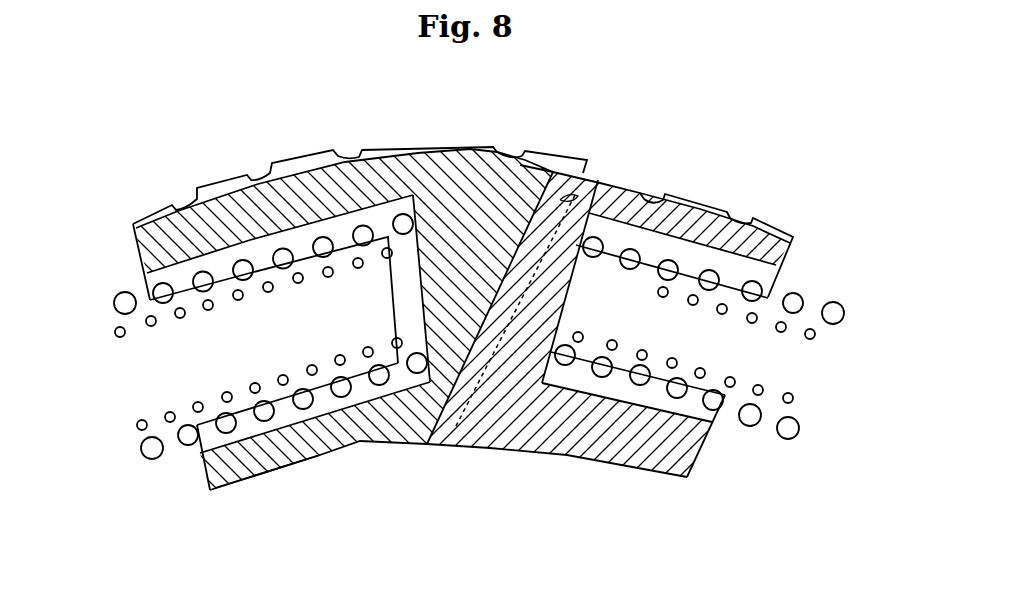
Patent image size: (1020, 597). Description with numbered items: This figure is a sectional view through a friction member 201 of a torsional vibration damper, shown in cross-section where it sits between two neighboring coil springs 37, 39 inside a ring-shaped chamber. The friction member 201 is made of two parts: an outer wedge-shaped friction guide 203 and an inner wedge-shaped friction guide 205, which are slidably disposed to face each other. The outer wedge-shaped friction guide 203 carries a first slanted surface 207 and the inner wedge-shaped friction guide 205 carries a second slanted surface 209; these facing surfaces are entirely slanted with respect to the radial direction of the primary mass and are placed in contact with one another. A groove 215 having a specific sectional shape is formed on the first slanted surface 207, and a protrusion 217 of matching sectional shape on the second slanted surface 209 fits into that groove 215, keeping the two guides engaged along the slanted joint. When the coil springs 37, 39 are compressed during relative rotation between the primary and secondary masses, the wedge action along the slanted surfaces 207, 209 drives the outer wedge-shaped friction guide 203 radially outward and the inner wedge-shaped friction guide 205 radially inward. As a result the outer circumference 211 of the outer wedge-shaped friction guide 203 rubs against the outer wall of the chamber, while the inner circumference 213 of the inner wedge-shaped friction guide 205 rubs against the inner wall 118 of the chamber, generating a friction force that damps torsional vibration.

The coil spring 37 is at (836, 302).
The coil spring 39 is at (121, 293).
The inner wall 118 is at (265, 487).
The friction member 201 is at (507, 505).
The outer wedge-shaped friction guide 203 is at (410, 433).
The inner wedge-shaped friction guide 205 is at (472, 440).
The first slanted surface 207 is at (400, 423).
The second slanted surface 209 is at (568, 198).
The outer circumference 211 is at (303, 156).
The inner circumference 213 is at (663, 477).
The groove 215 is at (570, 166).
The protrusion 217 is at (577, 197).